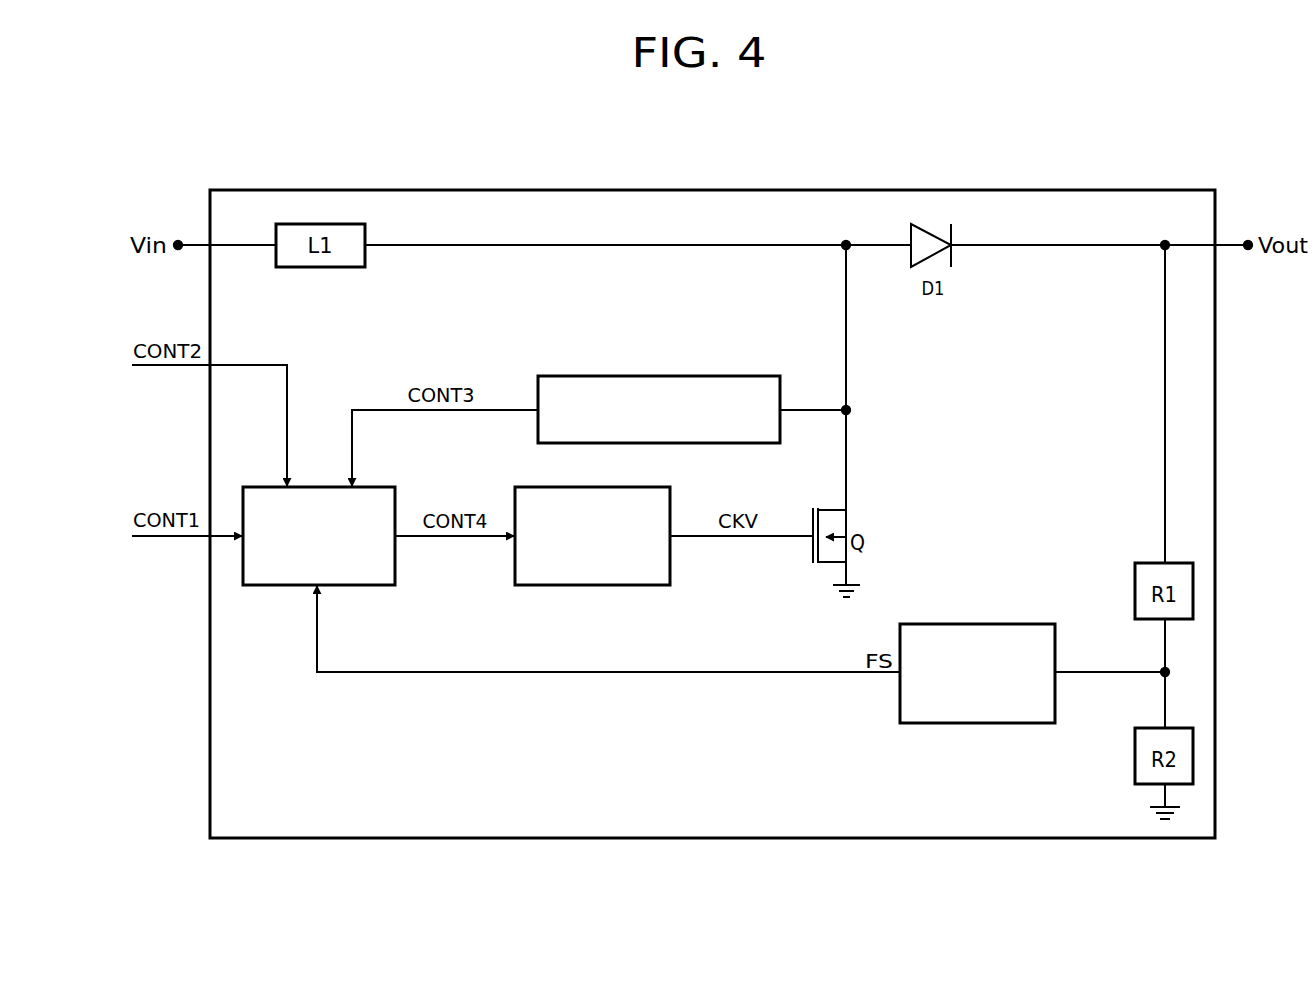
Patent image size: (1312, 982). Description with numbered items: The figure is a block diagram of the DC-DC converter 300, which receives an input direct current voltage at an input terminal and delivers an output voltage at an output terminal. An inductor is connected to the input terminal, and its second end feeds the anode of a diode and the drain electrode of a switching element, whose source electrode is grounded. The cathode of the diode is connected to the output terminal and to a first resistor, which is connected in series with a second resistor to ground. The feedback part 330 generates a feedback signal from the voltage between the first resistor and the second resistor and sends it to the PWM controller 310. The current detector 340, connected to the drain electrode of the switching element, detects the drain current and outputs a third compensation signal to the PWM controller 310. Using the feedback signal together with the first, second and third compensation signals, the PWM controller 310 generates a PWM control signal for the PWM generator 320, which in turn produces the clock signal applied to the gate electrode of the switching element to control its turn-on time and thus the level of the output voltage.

The DC-DC converter 300 is at (737, 190).
The PWM controller 310 is at (370, 587).
The PWM generator 320 is at (597, 587).
The feedback part 330 is at (975, 725).
The current detector 340 is at (655, 376).